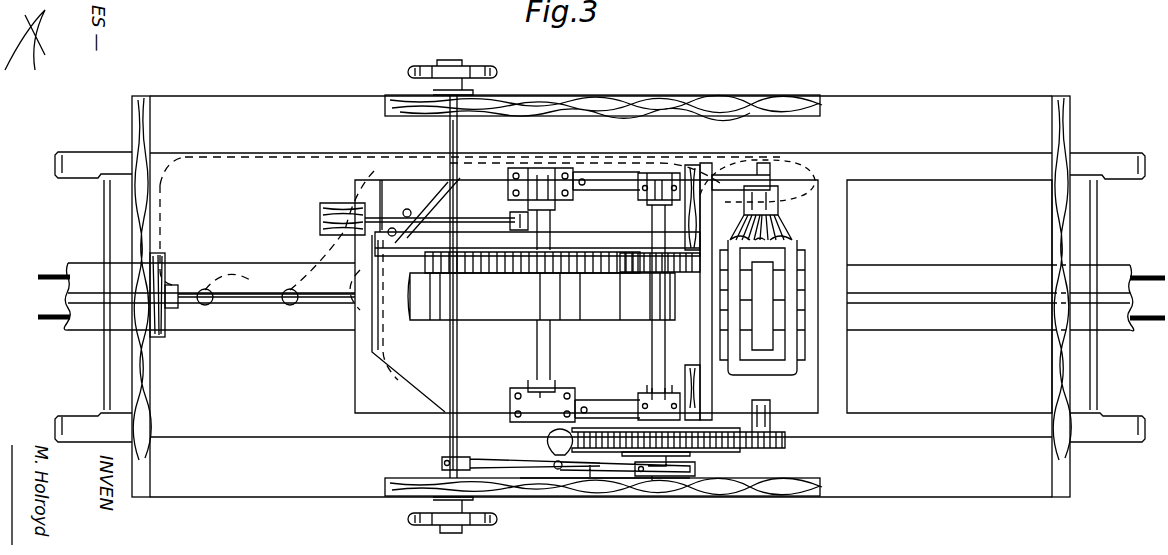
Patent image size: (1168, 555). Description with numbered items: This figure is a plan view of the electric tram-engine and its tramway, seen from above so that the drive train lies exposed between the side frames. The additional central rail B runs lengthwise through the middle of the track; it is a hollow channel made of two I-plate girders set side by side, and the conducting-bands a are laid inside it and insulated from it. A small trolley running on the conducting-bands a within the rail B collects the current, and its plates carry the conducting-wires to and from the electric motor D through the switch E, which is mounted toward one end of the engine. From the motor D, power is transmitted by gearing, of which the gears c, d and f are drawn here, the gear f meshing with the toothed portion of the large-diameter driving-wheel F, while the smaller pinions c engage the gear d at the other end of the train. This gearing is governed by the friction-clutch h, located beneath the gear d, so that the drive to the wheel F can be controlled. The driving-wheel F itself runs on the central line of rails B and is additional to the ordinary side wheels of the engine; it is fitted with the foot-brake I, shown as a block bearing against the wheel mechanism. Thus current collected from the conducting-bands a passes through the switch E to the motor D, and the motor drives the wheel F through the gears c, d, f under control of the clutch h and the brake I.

The conducting-bands a is at (588, 296).
The switch E is at (174, 320).
The foot-brake I is at (342, 219).
The driving-wheel F is at (541, 296).
The gear f is at (516, 264).
The gear c is at (680, 270).
The electric motor D is at (758, 269).
The central rail B is at (880, 305).
The gear d is at (706, 450).
The friction-clutch h is at (668, 475).